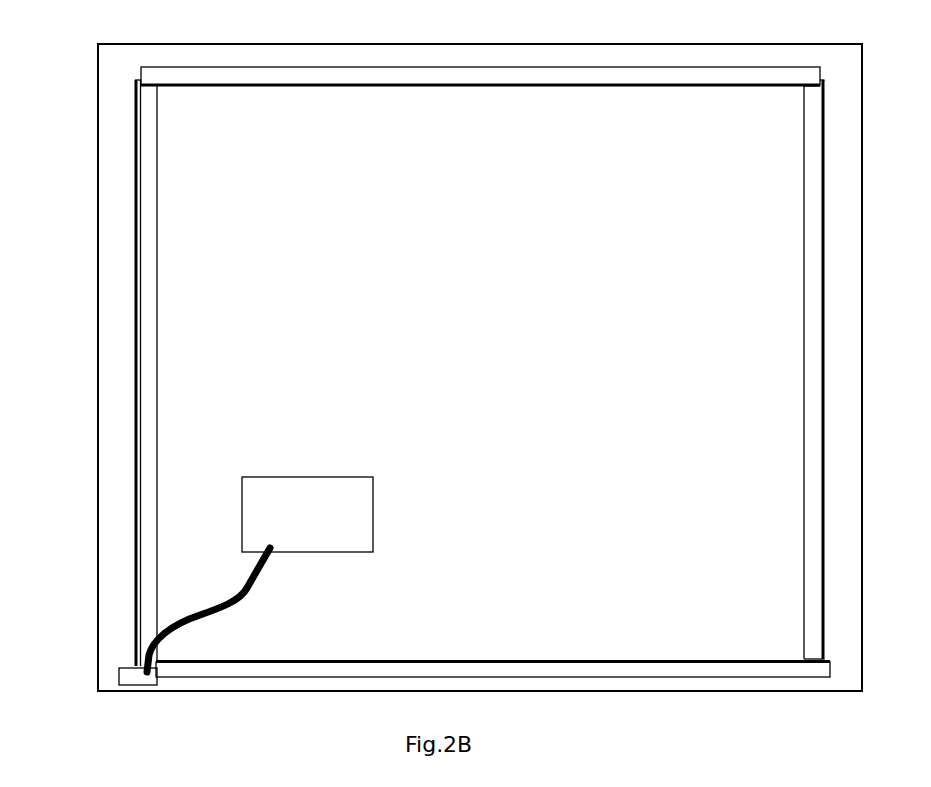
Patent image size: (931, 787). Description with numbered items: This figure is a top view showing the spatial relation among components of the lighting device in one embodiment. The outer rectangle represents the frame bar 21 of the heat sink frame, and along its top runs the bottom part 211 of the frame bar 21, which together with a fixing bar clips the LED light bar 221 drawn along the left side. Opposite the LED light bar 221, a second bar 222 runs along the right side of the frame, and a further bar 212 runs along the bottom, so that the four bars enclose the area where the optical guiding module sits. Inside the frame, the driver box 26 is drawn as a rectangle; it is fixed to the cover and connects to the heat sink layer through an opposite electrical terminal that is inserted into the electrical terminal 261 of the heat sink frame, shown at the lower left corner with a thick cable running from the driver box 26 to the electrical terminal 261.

The frame bar 21 is at (577, 53).
The bottom part of the frame bar 211 is at (257, 67).
The bottom frame bar 212 is at (505, 661).
The LED light bar 221 is at (133, 274).
The right side bar 222 is at (803, 296).
The driver box 26 is at (270, 512).
The electrical terminal 261 is at (132, 685).